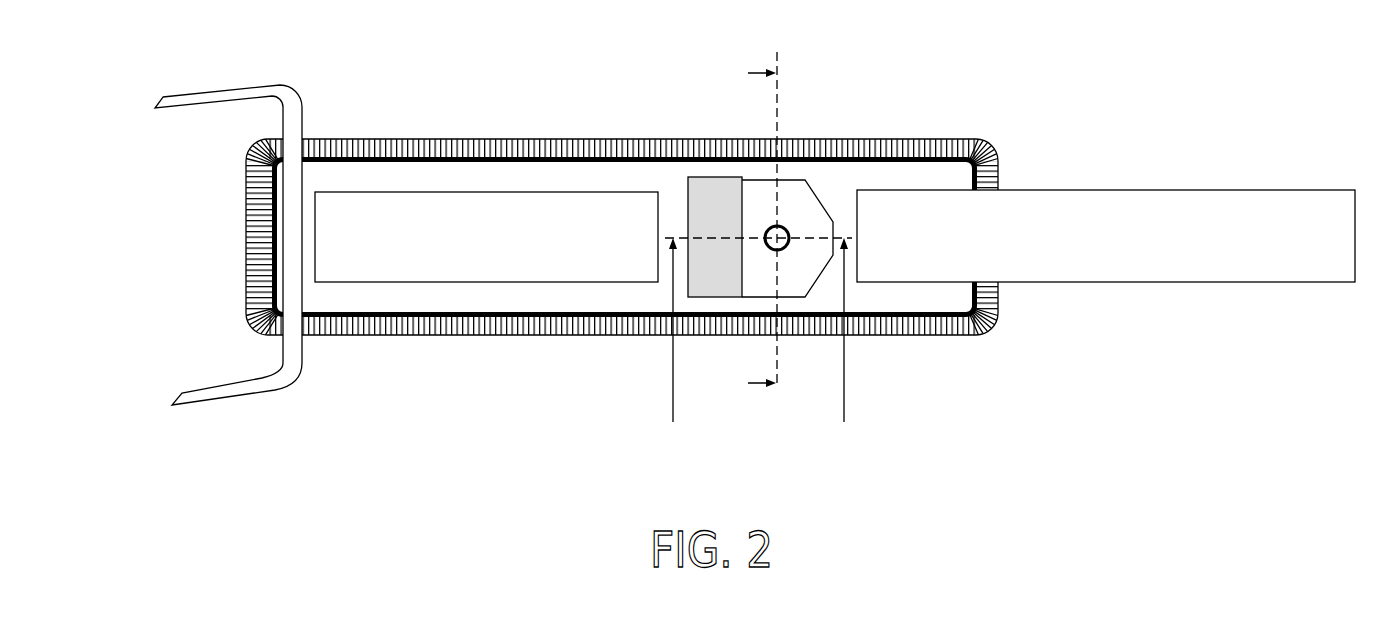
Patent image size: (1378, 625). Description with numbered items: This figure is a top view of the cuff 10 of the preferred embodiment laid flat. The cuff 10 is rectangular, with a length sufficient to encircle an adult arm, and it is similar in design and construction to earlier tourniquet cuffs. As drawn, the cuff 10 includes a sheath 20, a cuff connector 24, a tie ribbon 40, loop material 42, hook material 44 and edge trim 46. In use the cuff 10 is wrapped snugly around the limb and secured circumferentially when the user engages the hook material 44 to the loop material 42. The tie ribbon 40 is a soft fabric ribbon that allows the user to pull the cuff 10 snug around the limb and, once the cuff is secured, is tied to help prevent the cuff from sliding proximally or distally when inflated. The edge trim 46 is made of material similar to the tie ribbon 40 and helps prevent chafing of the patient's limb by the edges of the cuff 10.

The cuff 10 is at (755, 233).
The sheath 20 is at (721, 177).
The cuff connector 24 is at (784, 228).
The tie ribbon 40 is at (285, 85).
The loop material 42 is at (333, 282).
The hook material 44 is at (1285, 190).
The edge trim 46 is at (440, 335).